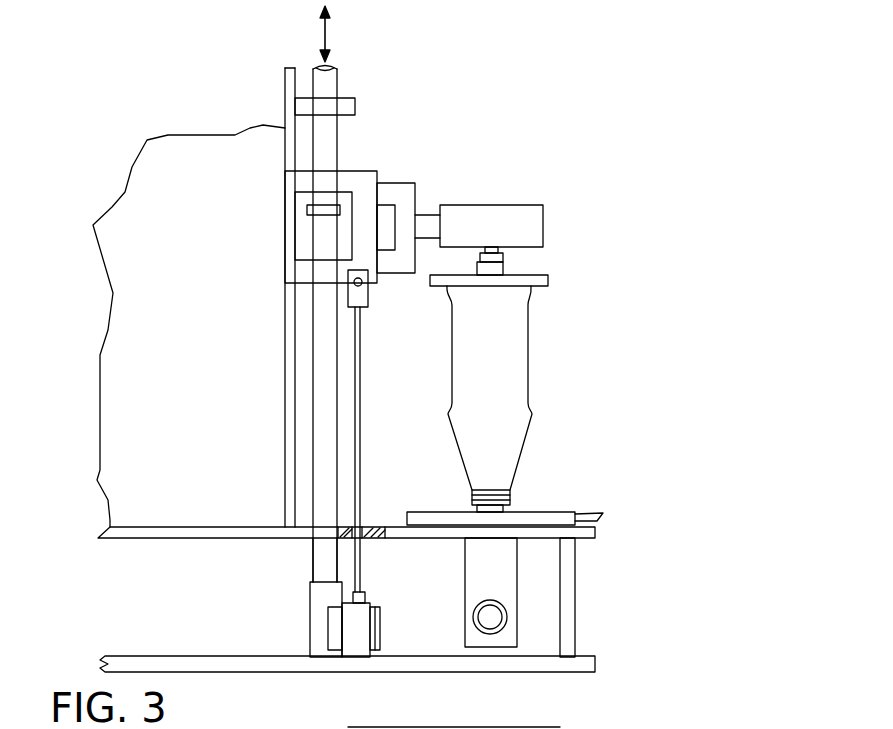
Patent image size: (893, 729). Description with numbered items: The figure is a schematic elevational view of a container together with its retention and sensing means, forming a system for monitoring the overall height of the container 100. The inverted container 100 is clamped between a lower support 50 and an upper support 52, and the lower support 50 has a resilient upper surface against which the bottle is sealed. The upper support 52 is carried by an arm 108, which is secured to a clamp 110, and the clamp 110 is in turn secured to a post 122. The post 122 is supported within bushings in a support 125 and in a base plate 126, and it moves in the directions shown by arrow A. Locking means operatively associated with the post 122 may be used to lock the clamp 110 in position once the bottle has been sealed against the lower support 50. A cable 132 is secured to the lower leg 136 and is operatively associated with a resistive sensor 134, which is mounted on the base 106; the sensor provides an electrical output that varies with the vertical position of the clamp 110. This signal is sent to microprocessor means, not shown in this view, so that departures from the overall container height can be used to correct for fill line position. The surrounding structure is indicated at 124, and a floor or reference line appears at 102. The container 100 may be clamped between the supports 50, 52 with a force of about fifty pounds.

The arrow A is at (329, 36).
The lower support 50 is at (552, 512).
The upper support 52 is at (550, 279).
The container 100 is at (529, 379).
The floor line 102 is at (495, 726).
The base 106 is at (292, 669).
The arm 108 is at (543, 212).
The clamp 110 is at (417, 181).
The post 122 is at (313, 425).
The wall 124 is at (190, 380).
The support 125 is at (356, 107).
The base plate 126 is at (587, 540).
The cable 132 is at (362, 402).
The resistive sensor 134 is at (355, 628).
The lower leg 136 is at (305, 284).